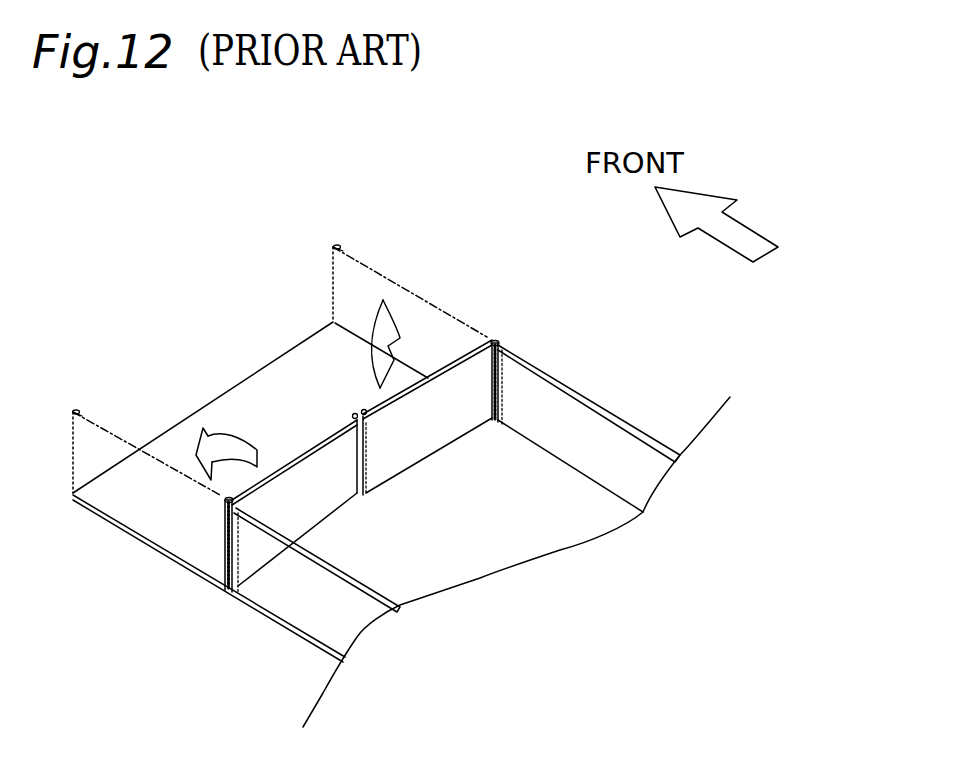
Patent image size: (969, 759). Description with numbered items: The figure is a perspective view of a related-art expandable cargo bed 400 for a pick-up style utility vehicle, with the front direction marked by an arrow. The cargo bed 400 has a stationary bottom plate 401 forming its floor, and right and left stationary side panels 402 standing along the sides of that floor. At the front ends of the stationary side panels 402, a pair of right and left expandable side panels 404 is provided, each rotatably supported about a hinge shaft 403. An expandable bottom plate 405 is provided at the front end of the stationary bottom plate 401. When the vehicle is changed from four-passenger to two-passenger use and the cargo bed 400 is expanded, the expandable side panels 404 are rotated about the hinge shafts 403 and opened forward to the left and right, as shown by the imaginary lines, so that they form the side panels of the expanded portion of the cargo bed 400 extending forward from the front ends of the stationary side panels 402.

The cargo bed 400 is at (733, 347).
The stationary bottom plate 401 is at (558, 548).
The stationary side panels 402 is at (622, 408).
The hinge shafts 403 is at (492, 343).
The expandable side panels 404 is at (457, 345).
The expandable bottom plate 405 is at (195, 428).